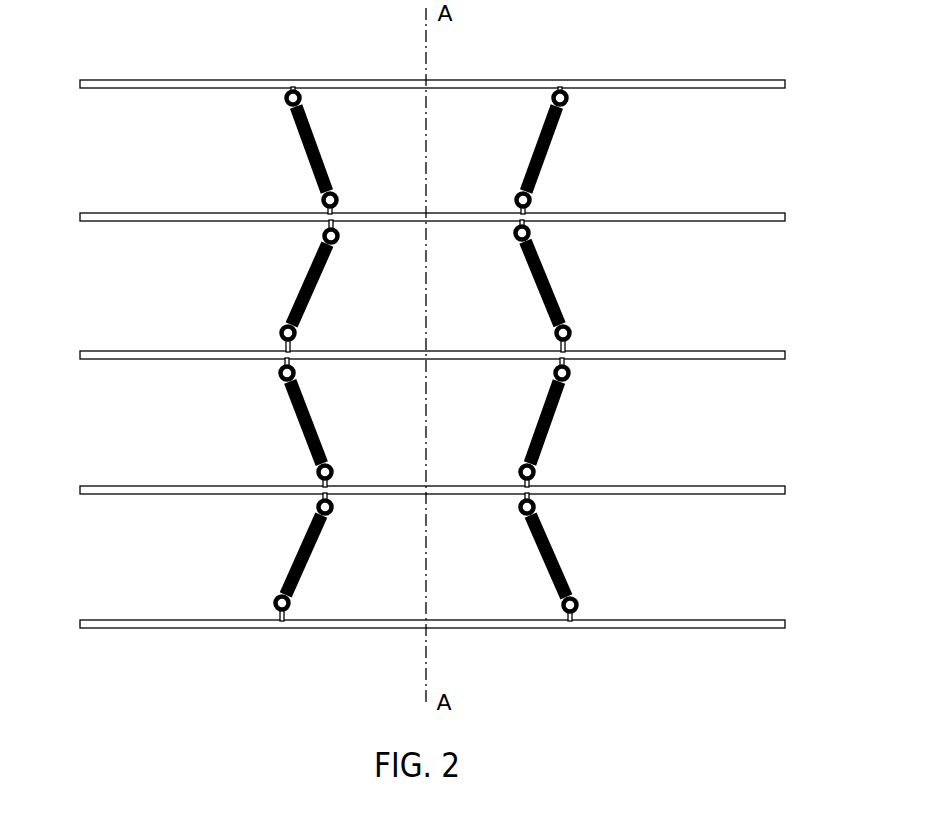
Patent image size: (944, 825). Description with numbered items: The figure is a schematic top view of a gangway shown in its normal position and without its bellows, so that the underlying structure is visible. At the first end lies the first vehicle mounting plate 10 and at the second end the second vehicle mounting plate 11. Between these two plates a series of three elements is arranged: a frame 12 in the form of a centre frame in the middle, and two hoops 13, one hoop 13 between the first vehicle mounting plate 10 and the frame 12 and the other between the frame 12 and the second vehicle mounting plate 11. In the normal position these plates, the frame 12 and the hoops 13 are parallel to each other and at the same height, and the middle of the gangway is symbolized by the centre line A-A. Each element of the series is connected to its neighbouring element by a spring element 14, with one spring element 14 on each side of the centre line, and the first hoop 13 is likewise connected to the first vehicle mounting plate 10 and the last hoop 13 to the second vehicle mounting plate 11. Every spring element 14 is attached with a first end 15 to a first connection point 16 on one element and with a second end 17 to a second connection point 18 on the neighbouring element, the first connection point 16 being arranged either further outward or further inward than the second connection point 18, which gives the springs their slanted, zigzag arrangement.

The first vehicle mounting plate 10 is at (773, 88).
The second vehicle mounting plate 11 is at (773, 628).
The frame 12 is at (773, 359).
The hoop 13 is at (773, 221).
The spring element 14 is at (300, 152).
The first end 15 is at (279, 100).
The first connection point 16 is at (293, 88).
The second end 17 is at (341, 201).
The second connection point 18 is at (325, 210).